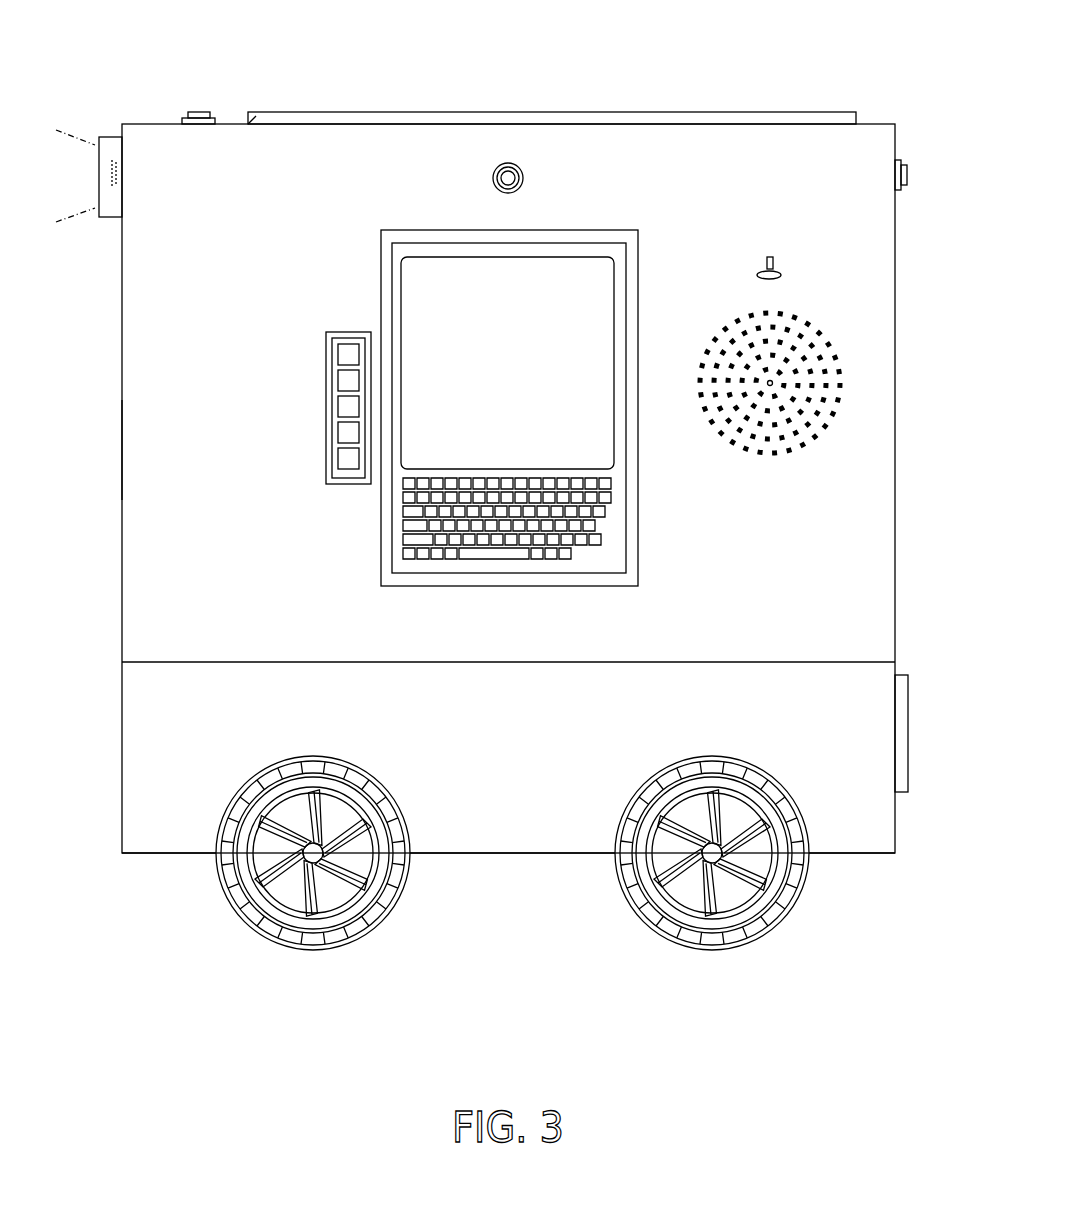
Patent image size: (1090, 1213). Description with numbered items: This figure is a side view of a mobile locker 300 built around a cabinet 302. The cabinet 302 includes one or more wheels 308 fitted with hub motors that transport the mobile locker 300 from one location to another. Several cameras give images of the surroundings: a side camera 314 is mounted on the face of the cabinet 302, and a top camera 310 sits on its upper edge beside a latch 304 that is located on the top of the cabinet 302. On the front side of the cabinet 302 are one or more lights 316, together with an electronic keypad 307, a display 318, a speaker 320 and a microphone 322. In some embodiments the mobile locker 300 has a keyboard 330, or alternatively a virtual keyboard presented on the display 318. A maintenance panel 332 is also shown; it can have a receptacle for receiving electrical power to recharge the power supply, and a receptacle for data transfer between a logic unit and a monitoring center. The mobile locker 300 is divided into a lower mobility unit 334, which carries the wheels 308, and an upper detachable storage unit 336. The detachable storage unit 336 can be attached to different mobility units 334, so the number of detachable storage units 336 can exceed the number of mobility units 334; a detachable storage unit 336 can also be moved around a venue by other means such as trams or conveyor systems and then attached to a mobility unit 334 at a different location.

The mobile locker 300 is at (158, 998).
The cabinet 302 is at (895, 280).
The latch 304 is at (769, 112).
The electronic keypad 307 is at (326, 380).
The wheels 308 is at (380, 915).
The top camera 310 is at (202, 112).
The side camera 314 is at (527, 178).
The lights 316 is at (99, 180).
The display 318 is at (602, 295).
The speaker 320 is at (840, 382).
The microphone 322 is at (782, 278).
The keyboard 330 is at (618, 512).
The maintenance panel 332 is at (908, 720).
The mobility unit 334 is at (135, 762).
The detachable storage unit 336 is at (135, 462).